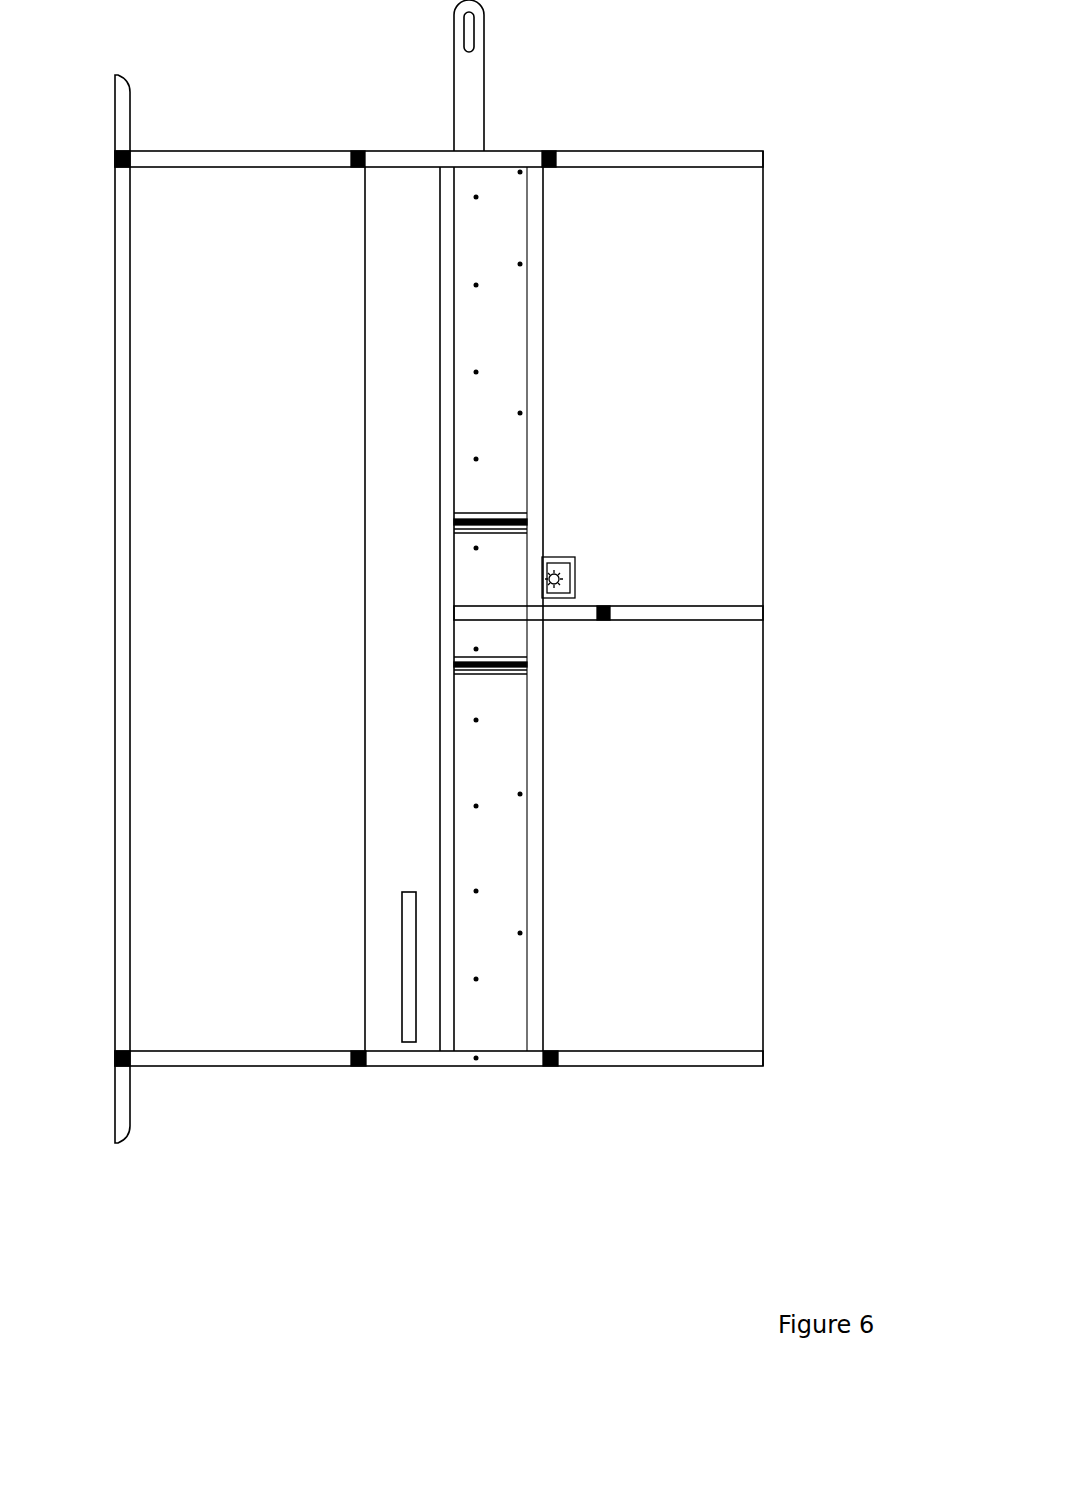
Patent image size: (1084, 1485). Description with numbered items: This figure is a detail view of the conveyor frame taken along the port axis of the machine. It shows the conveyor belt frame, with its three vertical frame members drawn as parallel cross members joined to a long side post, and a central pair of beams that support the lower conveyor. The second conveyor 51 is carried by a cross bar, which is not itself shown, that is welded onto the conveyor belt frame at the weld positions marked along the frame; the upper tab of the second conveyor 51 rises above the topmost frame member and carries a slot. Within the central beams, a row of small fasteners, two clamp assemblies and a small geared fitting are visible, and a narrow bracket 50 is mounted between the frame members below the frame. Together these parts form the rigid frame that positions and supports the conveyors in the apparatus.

The bracket 50 is at (412, 890).
The second conveyor 51 is at (454, 28).